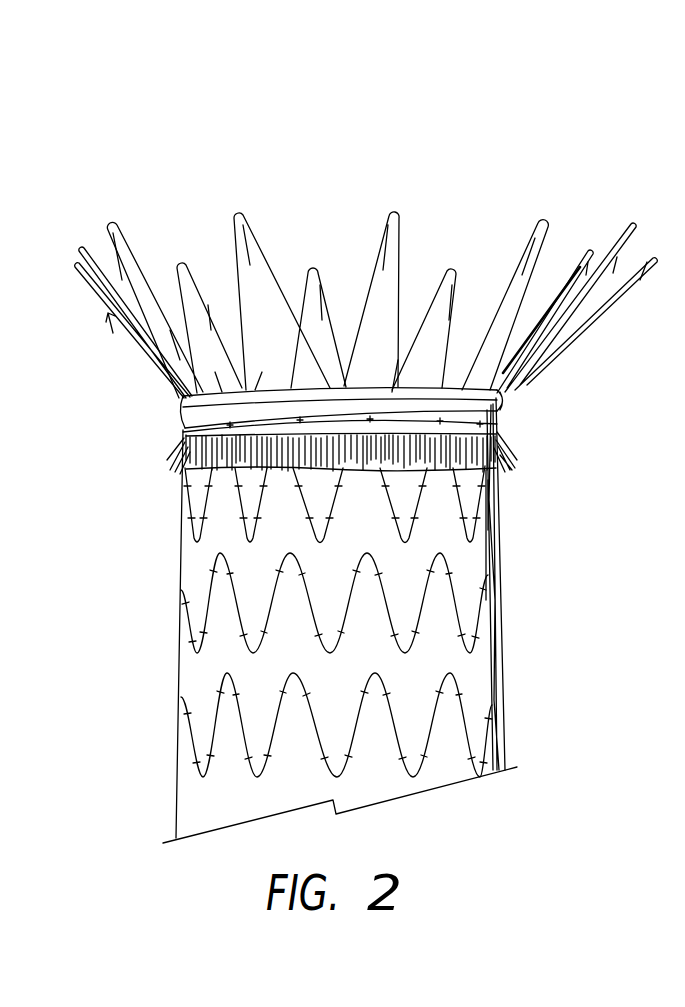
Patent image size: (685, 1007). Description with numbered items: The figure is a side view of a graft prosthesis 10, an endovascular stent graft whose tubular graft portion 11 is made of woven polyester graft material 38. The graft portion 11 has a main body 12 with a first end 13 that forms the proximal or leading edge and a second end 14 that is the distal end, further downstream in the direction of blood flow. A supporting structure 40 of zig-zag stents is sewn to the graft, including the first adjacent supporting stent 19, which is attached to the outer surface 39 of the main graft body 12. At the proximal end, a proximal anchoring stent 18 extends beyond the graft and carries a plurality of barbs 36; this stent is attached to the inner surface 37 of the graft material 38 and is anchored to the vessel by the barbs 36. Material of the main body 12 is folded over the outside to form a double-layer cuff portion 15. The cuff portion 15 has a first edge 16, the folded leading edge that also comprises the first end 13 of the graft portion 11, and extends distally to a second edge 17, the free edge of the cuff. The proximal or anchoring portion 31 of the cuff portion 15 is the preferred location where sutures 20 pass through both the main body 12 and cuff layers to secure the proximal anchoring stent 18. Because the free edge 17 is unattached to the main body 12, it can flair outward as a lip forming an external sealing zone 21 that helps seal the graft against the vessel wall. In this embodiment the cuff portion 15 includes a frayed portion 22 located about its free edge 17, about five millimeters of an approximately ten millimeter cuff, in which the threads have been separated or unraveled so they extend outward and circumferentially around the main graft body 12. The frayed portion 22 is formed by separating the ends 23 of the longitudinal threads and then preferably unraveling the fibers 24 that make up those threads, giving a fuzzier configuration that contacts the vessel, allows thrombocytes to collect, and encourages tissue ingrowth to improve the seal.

The graft prosthesis 10 is at (365, 457).
The graft portion 11 is at (346, 620).
The main body 12 is at (500, 663).
The first end 13 is at (172, 400).
The second end 14 is at (165, 820).
The cuff portion 15 is at (517, 400).
The first edge 16 is at (172, 392).
The second edge 17 is at (577, 469).
The proximal anchoring stent 18 is at (492, 277).
The first adjacent supporting stent 19 is at (485, 525).
The sutures 20 is at (497, 437).
The external sealing zone 21 is at (157, 477).
The frayed portion 22 is at (172, 449).
The ends of the threads 23 is at (577, 469).
The fibers 24 is at (500, 462).
The anchoring portion 31 is at (347, 381).
The barbs 36 is at (363, 274).
The inner surface 37 is at (375, 378).
The graft material 38 is at (185, 648).
The outer surface 39 is at (188, 556).
The supporting structure 40 is at (500, 634).